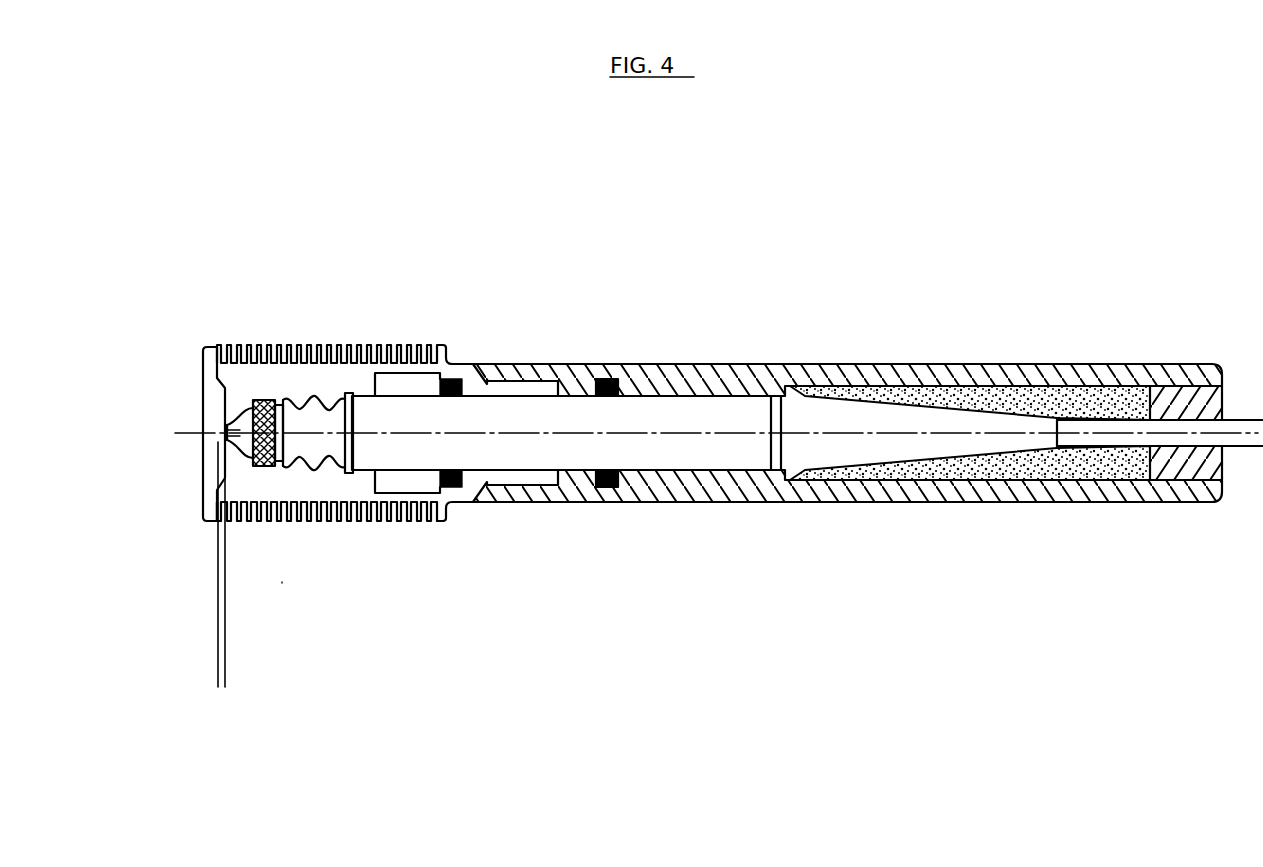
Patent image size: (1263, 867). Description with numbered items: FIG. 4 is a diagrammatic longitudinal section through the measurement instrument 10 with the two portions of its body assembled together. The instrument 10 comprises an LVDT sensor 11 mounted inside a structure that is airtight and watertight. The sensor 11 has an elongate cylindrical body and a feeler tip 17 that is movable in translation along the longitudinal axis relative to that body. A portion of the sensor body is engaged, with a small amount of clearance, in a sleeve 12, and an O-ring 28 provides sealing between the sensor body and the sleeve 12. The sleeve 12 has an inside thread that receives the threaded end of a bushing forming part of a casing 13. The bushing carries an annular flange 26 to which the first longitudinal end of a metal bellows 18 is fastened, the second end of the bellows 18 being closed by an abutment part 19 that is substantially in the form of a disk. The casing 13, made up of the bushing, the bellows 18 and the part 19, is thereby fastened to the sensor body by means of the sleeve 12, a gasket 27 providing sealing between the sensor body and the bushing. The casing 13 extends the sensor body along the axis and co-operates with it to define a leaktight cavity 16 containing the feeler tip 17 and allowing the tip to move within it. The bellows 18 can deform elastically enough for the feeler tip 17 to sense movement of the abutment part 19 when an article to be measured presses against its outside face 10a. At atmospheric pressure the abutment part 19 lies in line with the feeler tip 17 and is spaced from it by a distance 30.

The instrument 10 is at (737, 185).
The outside face 10a is at (200, 404).
The LVDT sensor 11 is at (655, 452).
The sleeve 12 is at (797, 503).
The casing 13 is at (283, 583).
The leaktight cavity 16 is at (311, 392).
The feeler tip 17 is at (239, 405).
The metal bellows 18 is at (357, 521).
The abutment part 19 is at (205, 467).
The annular flange 26 is at (440, 345).
The gasket 27 is at (460, 384).
The O-ring 28 is at (612, 381).
The distance 30 is at (240, 670).